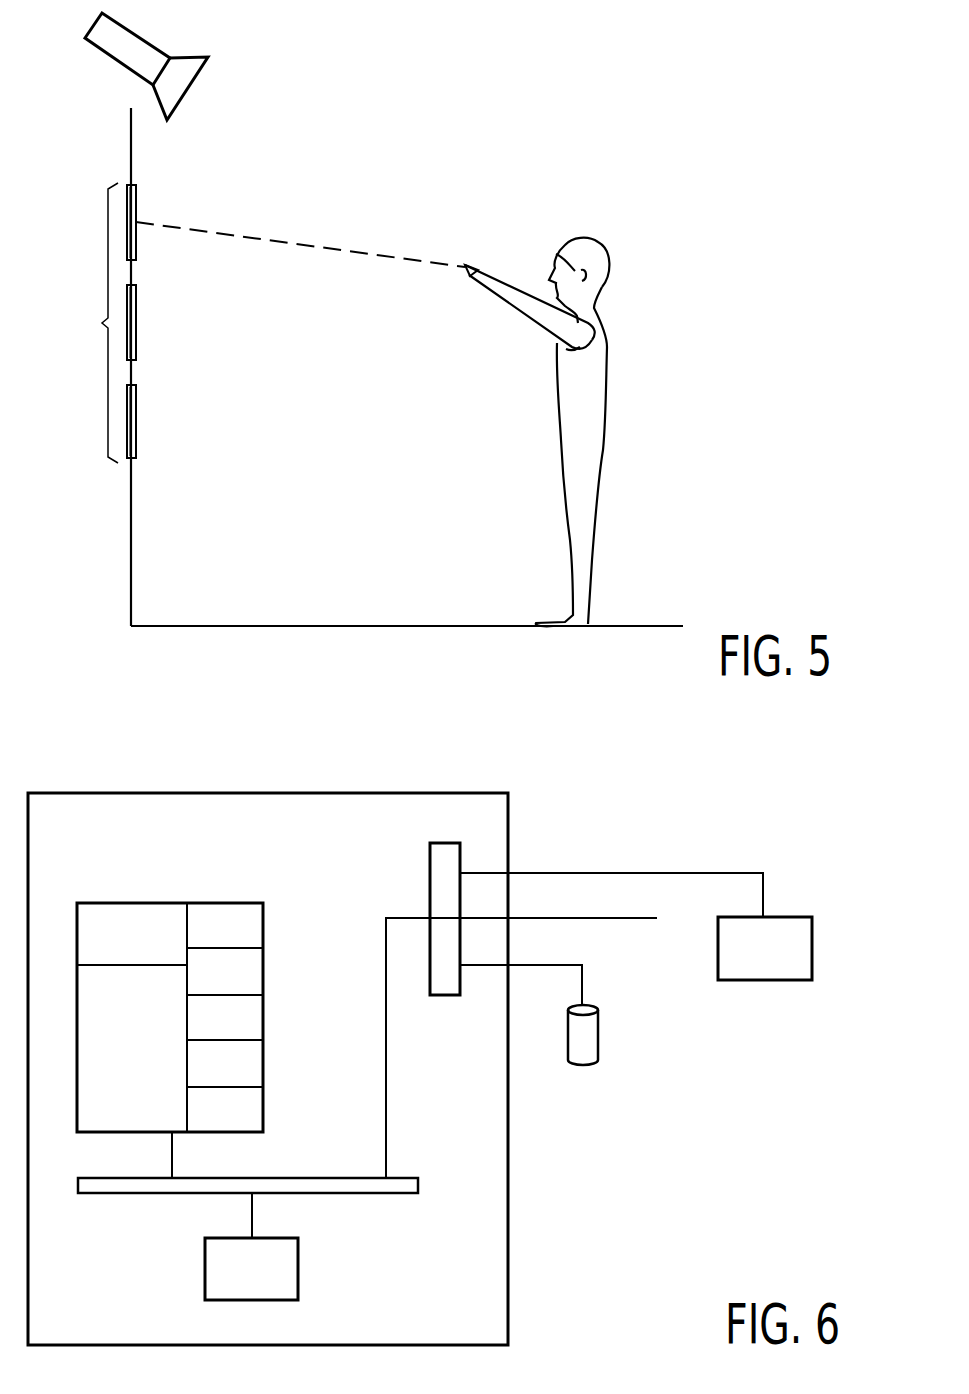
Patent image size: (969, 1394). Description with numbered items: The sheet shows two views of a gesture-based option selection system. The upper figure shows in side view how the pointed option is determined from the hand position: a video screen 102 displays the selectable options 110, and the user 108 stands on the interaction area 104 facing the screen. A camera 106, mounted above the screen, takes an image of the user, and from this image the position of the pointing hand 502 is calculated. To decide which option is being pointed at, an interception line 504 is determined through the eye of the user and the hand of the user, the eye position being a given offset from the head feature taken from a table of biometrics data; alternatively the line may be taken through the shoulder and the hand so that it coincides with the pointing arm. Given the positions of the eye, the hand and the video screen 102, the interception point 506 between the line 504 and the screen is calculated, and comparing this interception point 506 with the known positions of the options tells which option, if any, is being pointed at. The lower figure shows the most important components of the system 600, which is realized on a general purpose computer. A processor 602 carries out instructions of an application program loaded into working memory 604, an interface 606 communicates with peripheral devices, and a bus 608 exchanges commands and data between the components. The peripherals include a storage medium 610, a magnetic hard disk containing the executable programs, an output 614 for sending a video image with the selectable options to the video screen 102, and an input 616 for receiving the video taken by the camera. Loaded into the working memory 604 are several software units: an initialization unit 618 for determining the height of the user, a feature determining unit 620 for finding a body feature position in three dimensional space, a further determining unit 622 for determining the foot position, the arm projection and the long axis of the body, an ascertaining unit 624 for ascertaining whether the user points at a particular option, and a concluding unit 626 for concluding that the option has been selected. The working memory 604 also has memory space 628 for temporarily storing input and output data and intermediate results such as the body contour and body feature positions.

In FIG. 5, the video screen 102 is at (130, 133).
In FIG. 6, the video screen 102 is at (762, 985).
In FIG. 5, the interaction area 104 is at (638, 625).
In FIG. 5, the camera 106 is at (128, 68).
In FIG. 5, the user 108 is at (604, 408).
In FIG. 5, the selectable options 110 is at (99, 323).
In FIG. 5, the pointing hand 502 is at (473, 265).
In FIG. 5, the interception line 504 is at (336, 248).
In FIG. 5, the interception point 506 is at (136, 222).
In FIG. 6, the system 600 is at (511, 1225).
In FIG. 6, the processor 602 is at (302, 1275).
In FIG. 6, the working memory 604 is at (225, 902).
In FIG. 6, the interface 606 is at (430, 865).
In FIG. 6, the bus 608 is at (122, 1197).
In FIG. 6, the storage medium 610 is at (602, 1040).
In FIG. 6, the output 614 is at (552, 872).
In FIG. 6, the input 616 is at (627, 920).
In FIG. 6, the initialization unit 618 is at (255, 933).
In FIG. 6, the feature determining unit 620 is at (255, 975).
In FIG. 6, the further determining unit 622 is at (255, 1020).
In FIG. 6, the ascertaining unit 624 is at (255, 1062).
In FIG. 6, the concluding unit 626 is at (258, 1113).
In FIG. 6, the memory space 628 is at (123, 917).